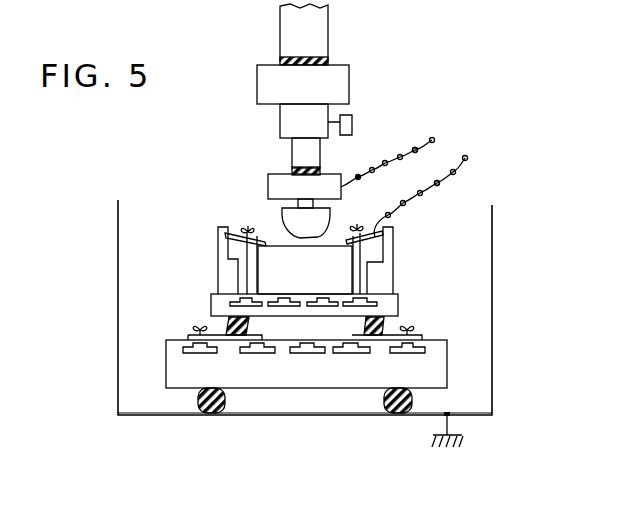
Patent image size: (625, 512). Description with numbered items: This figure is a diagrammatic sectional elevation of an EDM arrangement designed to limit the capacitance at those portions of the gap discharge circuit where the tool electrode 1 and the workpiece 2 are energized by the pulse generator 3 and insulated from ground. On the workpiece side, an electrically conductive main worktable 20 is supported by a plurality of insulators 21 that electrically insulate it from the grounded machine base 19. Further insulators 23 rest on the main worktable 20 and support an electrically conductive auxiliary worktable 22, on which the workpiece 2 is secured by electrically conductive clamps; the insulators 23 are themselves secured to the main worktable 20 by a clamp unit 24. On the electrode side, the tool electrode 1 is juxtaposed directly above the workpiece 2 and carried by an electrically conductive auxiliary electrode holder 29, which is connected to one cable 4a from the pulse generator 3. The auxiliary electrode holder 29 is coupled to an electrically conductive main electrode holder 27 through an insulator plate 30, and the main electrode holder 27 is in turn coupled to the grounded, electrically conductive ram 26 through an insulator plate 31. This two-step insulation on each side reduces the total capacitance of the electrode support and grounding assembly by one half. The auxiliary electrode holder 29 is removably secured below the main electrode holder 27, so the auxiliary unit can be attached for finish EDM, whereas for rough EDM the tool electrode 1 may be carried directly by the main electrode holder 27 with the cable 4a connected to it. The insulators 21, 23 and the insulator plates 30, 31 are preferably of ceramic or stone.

The tool electrode 1 is at (278, 212).
The workpiece 2 is at (278, 252).
The pulse generator 3 is at (447, 152).
The cable 4a is at (415, 148).
The machine base 19 is at (480, 417).
The main worktable 20 is at (447, 360).
The insulators 21 is at (200, 405).
The auxiliary worktable 22 is at (398, 303).
The insulators 23 is at (226, 332).
The clamp unit 24 is at (192, 330).
The ram 26 is at (328, 28).
The main electrode holder 27 is at (349, 80).
The auxiliary electrode holder 29 is at (275, 172).
The insulator plate 30 is at (320, 169).
The insulator plate 31 is at (280, 60).